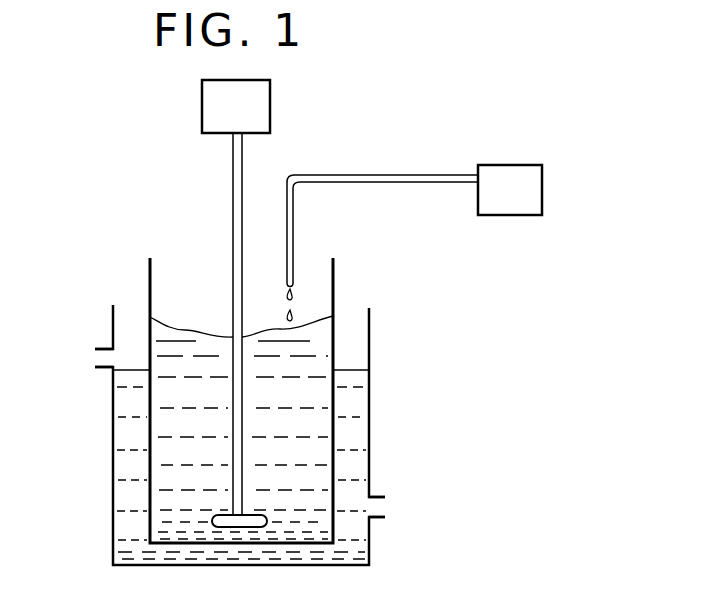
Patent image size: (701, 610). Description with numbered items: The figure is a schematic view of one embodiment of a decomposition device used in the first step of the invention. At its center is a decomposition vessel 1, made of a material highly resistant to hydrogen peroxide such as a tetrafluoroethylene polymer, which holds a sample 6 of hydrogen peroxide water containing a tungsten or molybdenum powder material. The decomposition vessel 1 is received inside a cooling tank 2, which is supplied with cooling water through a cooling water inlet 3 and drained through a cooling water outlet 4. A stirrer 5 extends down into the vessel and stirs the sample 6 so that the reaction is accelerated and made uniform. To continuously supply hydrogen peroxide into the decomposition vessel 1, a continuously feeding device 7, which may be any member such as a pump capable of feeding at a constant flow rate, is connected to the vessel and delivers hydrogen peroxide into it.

The decomposition vessel 1 is at (336, 293).
The cooling tank 2 is at (272, 566).
The cooling water inlet 3 is at (388, 507).
The cooling water outlet 4 is at (95, 360).
The stirrer 5 is at (270, 97).
The sample 6 is at (307, 530).
The continuously H2O2 feeding device 7 is at (500, 180).